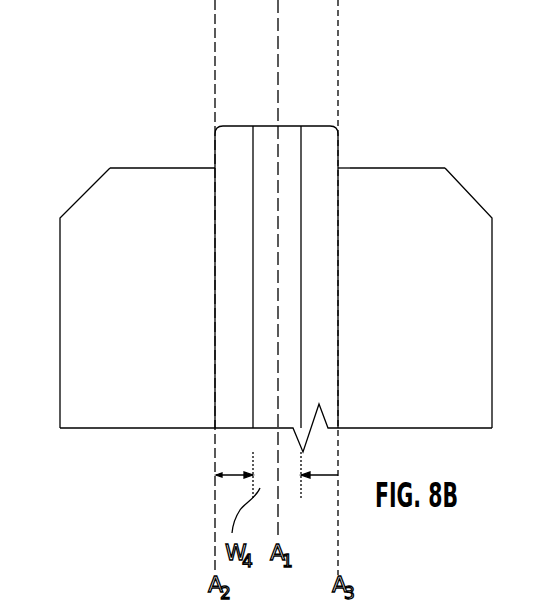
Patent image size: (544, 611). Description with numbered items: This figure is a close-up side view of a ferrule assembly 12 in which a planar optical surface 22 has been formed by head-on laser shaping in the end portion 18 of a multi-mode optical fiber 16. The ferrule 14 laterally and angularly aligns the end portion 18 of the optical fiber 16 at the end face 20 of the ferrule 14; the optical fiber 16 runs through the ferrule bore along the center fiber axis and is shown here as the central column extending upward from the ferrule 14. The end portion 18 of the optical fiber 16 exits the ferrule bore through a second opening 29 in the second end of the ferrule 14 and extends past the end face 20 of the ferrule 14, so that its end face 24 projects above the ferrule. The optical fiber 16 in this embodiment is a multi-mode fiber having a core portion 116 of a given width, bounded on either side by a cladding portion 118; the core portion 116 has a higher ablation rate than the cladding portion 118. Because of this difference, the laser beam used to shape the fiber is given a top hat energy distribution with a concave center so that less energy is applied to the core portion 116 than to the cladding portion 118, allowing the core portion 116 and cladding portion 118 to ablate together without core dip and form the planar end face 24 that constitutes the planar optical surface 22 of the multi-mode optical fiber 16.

The ferrule assembly 12 is at (475, 157).
The ferrule 14 is at (60, 268).
The optical fiber 16 is at (228, 285).
The end portion 18 is at (202, 159).
The end face 20 is at (399, 168).
The planar optical surface 22 is at (307, 103).
The end face 24 is at (226, 112).
The second opening 29 is at (352, 187).
The core portion 116 is at (277, 330).
The cladding portion 118 is at (324, 288).